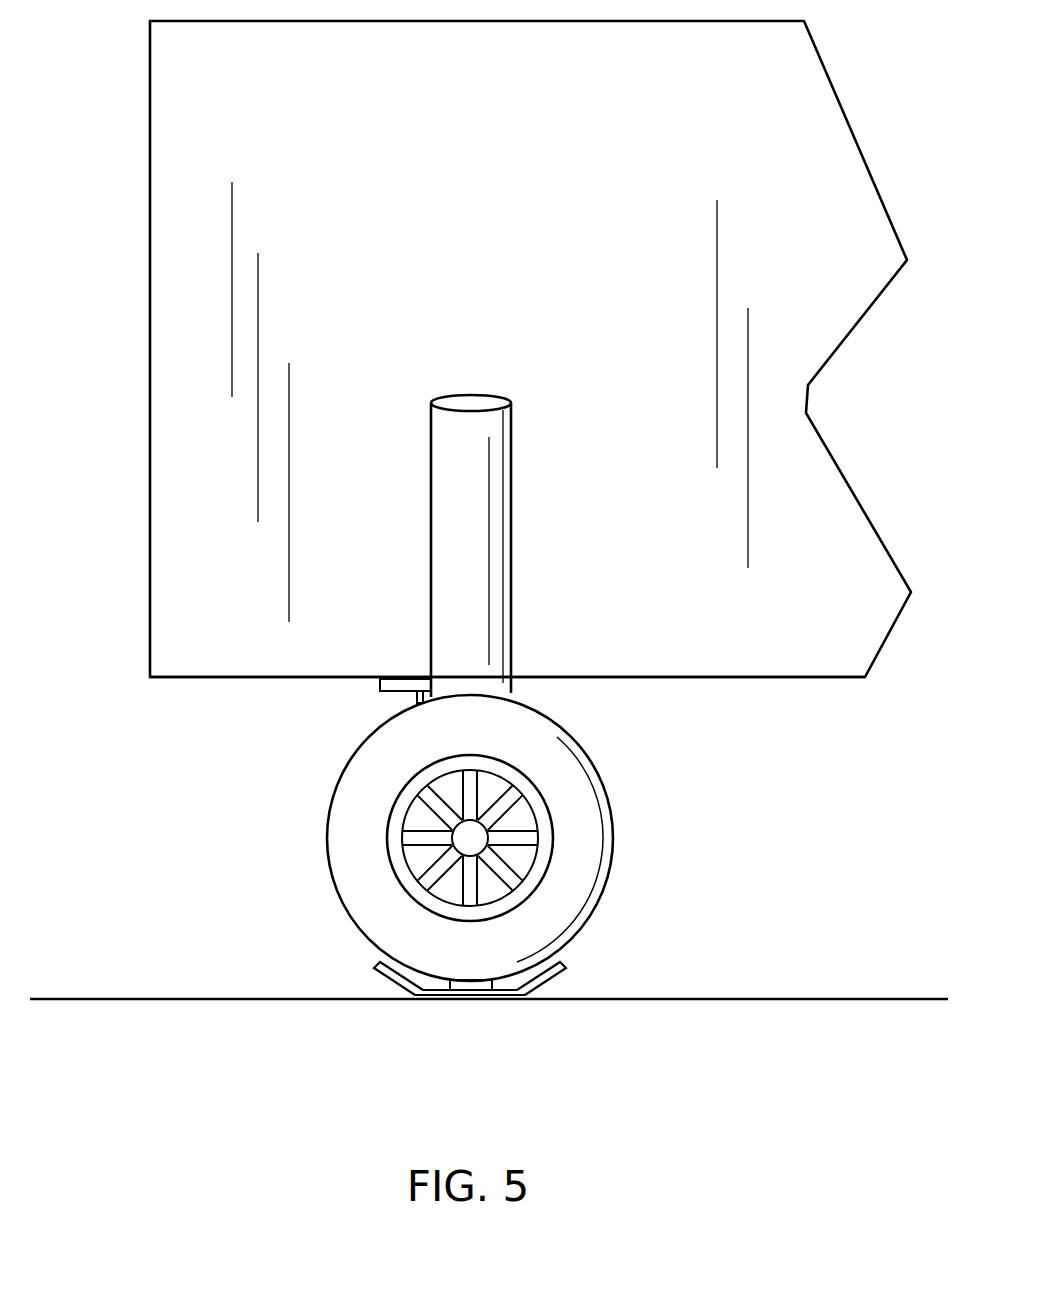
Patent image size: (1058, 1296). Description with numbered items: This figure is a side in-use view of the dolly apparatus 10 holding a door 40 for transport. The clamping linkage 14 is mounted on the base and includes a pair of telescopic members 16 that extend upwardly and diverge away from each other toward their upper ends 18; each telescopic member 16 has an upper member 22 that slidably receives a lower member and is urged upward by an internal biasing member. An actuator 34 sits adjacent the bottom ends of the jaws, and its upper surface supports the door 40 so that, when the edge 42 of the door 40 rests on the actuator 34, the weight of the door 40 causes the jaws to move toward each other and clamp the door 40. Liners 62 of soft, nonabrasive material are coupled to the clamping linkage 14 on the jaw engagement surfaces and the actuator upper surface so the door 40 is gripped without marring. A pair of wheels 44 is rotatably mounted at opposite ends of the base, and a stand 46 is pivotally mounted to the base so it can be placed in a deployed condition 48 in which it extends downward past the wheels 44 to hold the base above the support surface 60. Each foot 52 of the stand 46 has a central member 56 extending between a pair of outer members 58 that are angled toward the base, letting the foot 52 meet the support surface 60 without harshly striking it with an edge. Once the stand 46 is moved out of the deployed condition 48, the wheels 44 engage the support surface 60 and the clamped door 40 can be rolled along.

The dolly apparatus 10 is at (193, 809).
The clamping linkage 14 is at (537, 352).
The telescopic member 16 is at (542, 580).
The upper end 18 is at (463, 403).
The upper member 22 is at (485, 493).
The actuator 34 is at (412, 697).
The door 40 is at (187, 283).
The edge 42 is at (220, 678).
The wheel 44 is at (583, 837).
The stand 46 is at (585, 958).
The deployed condition 48 is at (357, 960).
The foot 52 is at (503, 1015).
The central member 56 is at (463, 999).
The outer member 58 is at (390, 985).
The support surface 60 is at (812, 999).
The liner 62 is at (402, 677).